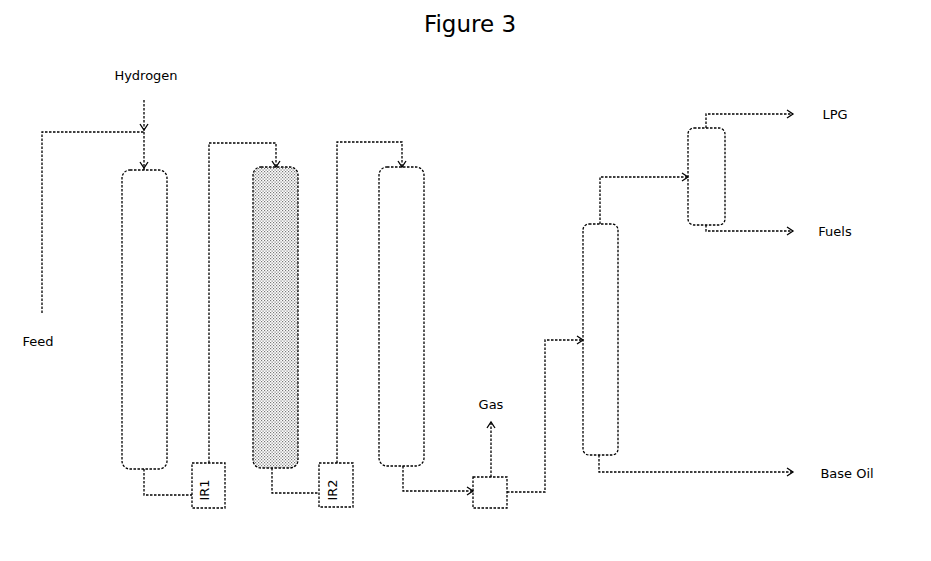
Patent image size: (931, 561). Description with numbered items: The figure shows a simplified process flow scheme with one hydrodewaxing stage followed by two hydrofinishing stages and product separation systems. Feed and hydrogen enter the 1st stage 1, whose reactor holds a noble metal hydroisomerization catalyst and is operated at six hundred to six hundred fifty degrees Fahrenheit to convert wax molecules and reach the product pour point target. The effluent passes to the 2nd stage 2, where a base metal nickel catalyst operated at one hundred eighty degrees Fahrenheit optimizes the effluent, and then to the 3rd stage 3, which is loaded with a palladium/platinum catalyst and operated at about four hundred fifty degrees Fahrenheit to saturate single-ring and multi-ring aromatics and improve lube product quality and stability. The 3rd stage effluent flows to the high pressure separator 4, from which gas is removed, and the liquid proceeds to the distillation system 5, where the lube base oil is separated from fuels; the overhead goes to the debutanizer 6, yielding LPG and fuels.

The 1st stage 1 is at (144, 319).
The 2nd stage 2 is at (275, 317).
The 3rd stage 3 is at (401, 316).
The high pressure separator 4 is at (490, 492).
The distillation system 5 is at (600, 339).
The debutanizer 6 is at (706, 176).